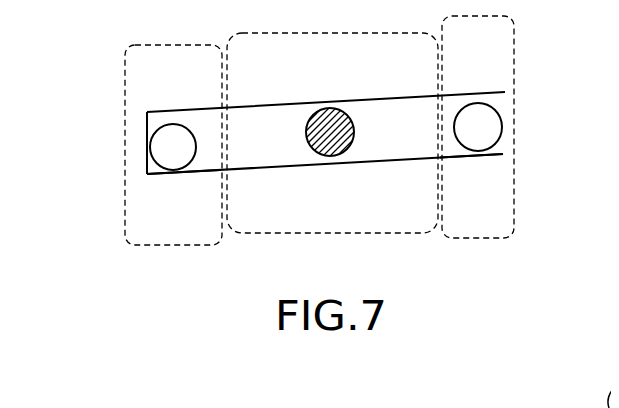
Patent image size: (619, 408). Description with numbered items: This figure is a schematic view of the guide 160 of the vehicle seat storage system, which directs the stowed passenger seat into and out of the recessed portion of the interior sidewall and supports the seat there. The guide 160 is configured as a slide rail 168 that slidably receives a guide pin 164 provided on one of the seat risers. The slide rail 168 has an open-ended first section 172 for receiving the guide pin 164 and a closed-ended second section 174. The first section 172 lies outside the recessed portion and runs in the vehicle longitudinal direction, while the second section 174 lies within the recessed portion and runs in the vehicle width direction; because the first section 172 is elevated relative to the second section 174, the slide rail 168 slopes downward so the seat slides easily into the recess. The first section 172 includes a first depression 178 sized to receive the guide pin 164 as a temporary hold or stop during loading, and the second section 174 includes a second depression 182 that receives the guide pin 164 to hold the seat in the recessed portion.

The guide 160 is at (387, 196).
The guide pin 164 is at (153, 166).
The slide rail 168 is at (300, 103).
The first section 172 is at (478, 92).
The second section 174 is at (190, 111).
The first depression 178 is at (483, 160).
The second depression 182 is at (180, 176).